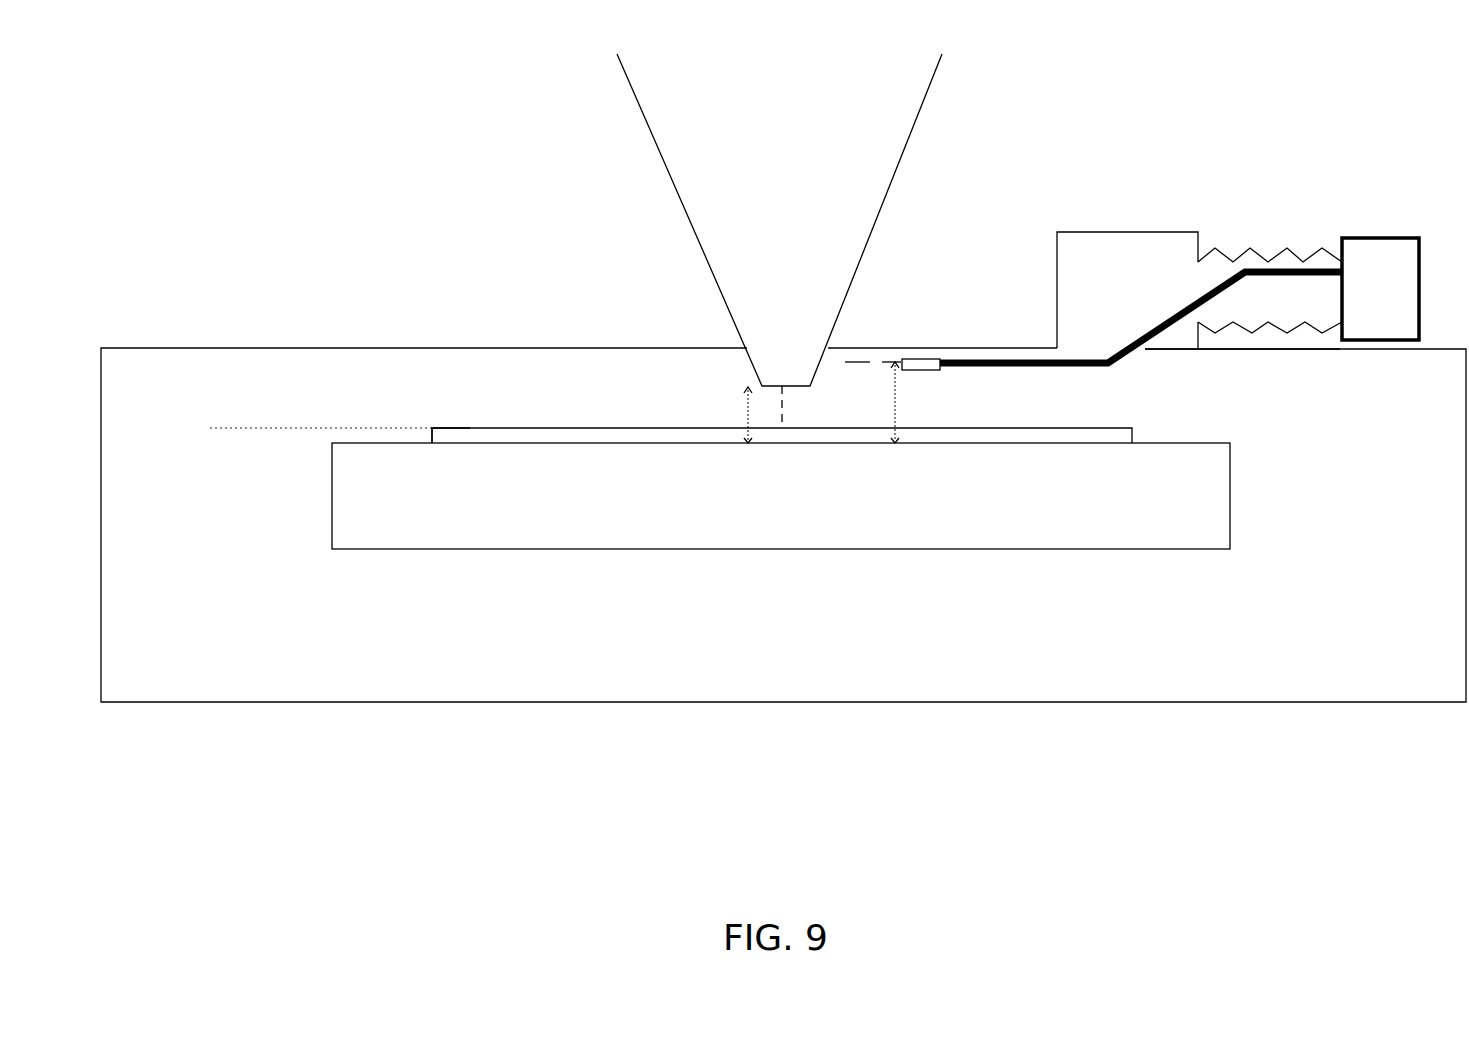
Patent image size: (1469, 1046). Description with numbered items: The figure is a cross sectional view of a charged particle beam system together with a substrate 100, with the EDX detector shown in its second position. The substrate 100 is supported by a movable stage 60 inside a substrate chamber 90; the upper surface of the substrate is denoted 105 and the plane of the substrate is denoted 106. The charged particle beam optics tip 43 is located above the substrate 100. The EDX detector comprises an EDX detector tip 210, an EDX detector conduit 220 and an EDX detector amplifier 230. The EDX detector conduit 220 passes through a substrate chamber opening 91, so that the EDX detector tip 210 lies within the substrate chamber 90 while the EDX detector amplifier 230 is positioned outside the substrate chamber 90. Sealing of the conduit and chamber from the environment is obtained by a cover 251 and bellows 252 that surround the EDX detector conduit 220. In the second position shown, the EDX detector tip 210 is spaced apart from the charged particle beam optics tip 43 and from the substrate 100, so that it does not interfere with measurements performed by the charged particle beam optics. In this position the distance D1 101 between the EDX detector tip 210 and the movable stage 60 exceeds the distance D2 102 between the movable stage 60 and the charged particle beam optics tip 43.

The charged particle beam optics tip 43 is at (773, 216).
The substrate chamber 90 is at (225, 580).
The movable stage 60 is at (767, 508).
The substrate 100 is at (548, 435).
The upper surface of the substrate 105 is at (453, 425).
The plane of substrate 106 is at (299, 424).
The distance D1 101 is at (707, 415).
The distance D2 102 is at (940, 402).
The EDX detector tip 210 is at (893, 362).
The EDX detector conduit 220 is at (1085, 367).
The EDX detector amplifier 230 is at (1357, 301).
The cover 251 is at (1117, 230).
The bellows 252 is at (1213, 250).
The substrate chamber opening 91 is at (1138, 362).